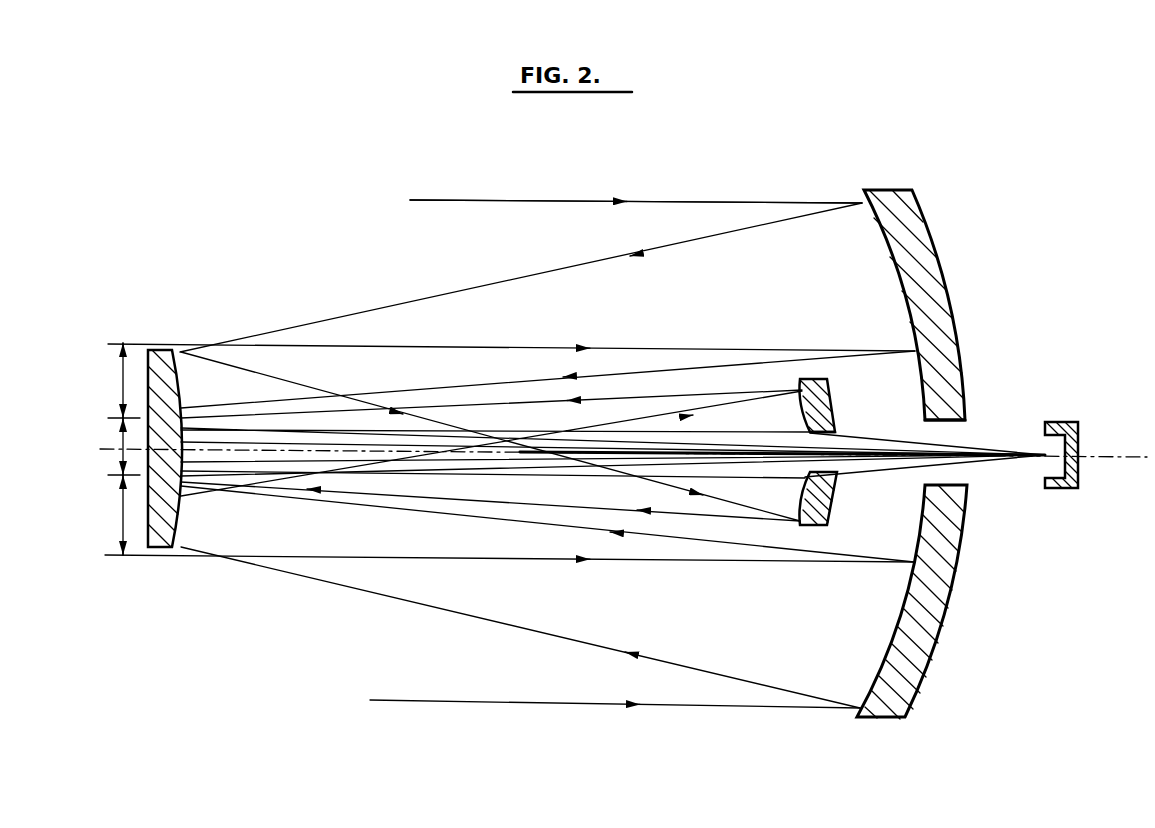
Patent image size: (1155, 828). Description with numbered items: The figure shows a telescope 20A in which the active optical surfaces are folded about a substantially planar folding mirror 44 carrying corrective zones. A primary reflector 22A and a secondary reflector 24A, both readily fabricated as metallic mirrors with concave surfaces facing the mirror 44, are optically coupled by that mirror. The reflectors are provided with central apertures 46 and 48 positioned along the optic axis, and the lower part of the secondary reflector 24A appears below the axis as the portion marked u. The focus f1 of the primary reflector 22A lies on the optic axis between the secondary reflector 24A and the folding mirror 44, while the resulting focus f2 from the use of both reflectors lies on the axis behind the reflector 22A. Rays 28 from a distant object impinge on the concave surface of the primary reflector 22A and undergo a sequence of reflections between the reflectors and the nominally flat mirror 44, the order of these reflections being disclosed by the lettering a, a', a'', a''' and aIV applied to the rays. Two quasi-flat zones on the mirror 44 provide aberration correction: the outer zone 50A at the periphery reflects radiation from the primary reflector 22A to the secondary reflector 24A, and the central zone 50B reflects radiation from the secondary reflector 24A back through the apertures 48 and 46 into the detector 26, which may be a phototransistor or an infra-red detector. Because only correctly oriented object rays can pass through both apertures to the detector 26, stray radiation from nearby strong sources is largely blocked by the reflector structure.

The telescope 20A is at (301, 256).
The primary reflector 22A is at (935, 242).
The secondary reflector 24A is at (835, 392).
The detector 26 is at (1060, 490).
The rays 28 is at (525, 200).
The folding mirror 44 is at (165, 350).
The central aperture of primary reflector 46 is at (955, 428).
The central aperture of secondary reflector 48 is at (833, 437).
The outer zone 50A is at (182, 385).
The central zone 50B is at (185, 428).
The incident ray a is at (636, 180).
The ray reflected from primary mirror a' is at (521, 277).
The ray refracted by lens a'' is at (490, 436).
The ray reflected from secondary mirror a''' is at (490, 513).
The ray to second focus aIV is at (205, 478).
The focus of primary reflector f1 is at (546, 426).
The resulting focus f2 is at (1028, 440).
The lower secondary mirror u is at (836, 506).